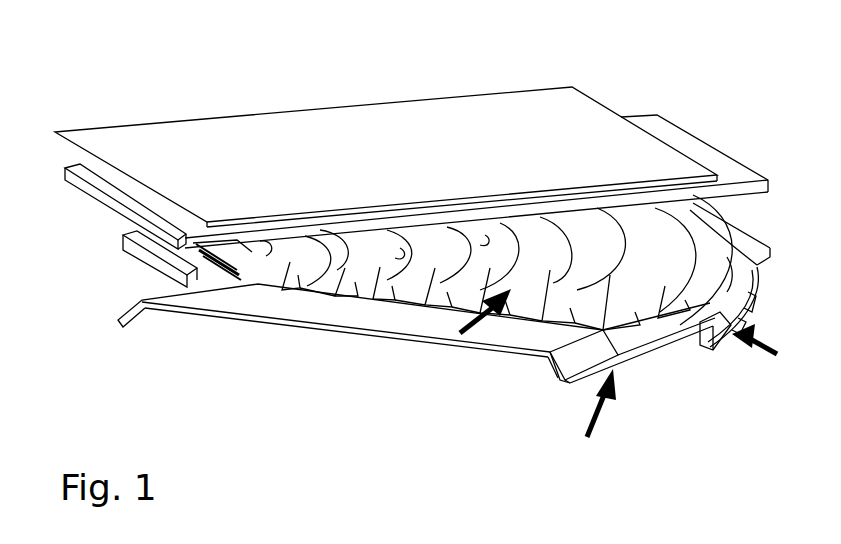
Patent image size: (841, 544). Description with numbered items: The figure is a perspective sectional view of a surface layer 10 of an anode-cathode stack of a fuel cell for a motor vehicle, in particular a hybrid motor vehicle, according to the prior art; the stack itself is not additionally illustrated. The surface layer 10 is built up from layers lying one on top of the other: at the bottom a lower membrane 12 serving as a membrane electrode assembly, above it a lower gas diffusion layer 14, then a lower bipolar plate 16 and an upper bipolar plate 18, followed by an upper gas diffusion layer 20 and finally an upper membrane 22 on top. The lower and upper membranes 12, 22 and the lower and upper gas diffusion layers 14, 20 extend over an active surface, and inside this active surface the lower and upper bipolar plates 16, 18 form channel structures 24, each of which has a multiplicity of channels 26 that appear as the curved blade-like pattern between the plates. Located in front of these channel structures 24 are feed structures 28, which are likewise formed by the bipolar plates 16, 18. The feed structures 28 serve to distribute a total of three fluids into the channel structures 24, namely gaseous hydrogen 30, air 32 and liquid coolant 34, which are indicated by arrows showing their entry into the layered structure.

The surface layer 10 is at (62, 108).
The lower membrane 12 is at (143, 273).
The lower gas diffusion layer 14 is at (138, 252).
The lower bipolar plate 16 is at (697, 350).
The upper bipolar plate 18 is at (703, 223).
The upper gas diffusion layer 20 is at (730, 164).
The upper membrane 22 is at (587, 110).
The channel structures 24 is at (628, 397).
The channels 26 is at (527, 245).
The feed structures 28 is at (378, 360).
The gaseous hydrogen 30 is at (760, 362).
The air 32 is at (482, 325).
The liquid coolant 34 is at (587, 440).